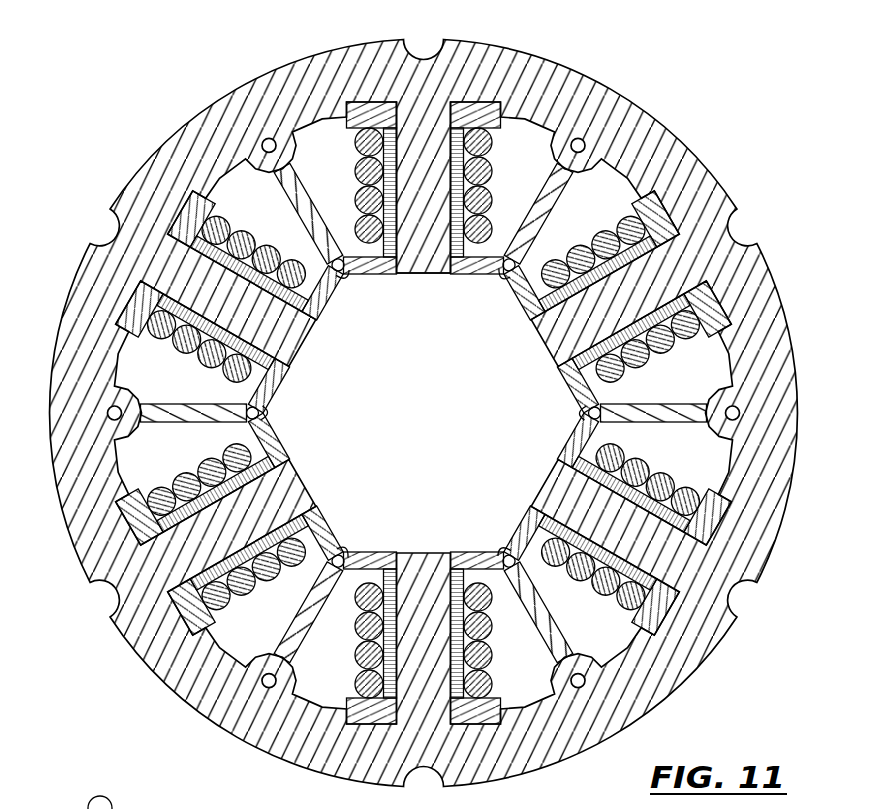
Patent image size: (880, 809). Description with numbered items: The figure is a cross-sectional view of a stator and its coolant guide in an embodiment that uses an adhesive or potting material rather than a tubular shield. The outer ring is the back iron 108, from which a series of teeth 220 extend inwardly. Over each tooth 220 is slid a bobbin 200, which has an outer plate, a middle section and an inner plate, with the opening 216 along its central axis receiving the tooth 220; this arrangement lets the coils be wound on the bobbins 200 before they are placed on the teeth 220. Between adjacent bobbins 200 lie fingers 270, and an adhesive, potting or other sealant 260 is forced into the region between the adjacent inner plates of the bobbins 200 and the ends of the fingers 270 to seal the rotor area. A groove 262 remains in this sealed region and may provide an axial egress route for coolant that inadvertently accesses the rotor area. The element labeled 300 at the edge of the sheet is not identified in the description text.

The back iron 108 is at (537, 83).
The bobbin 200 is at (633, 213).
The opening 216 is at (380, 285).
The tooth 220 is at (425, 130).
The sealant 260 is at (500, 272).
The groove 262 is at (347, 547).
The finger 270 is at (305, 190).
The rotor element 300 is at (153, 798).